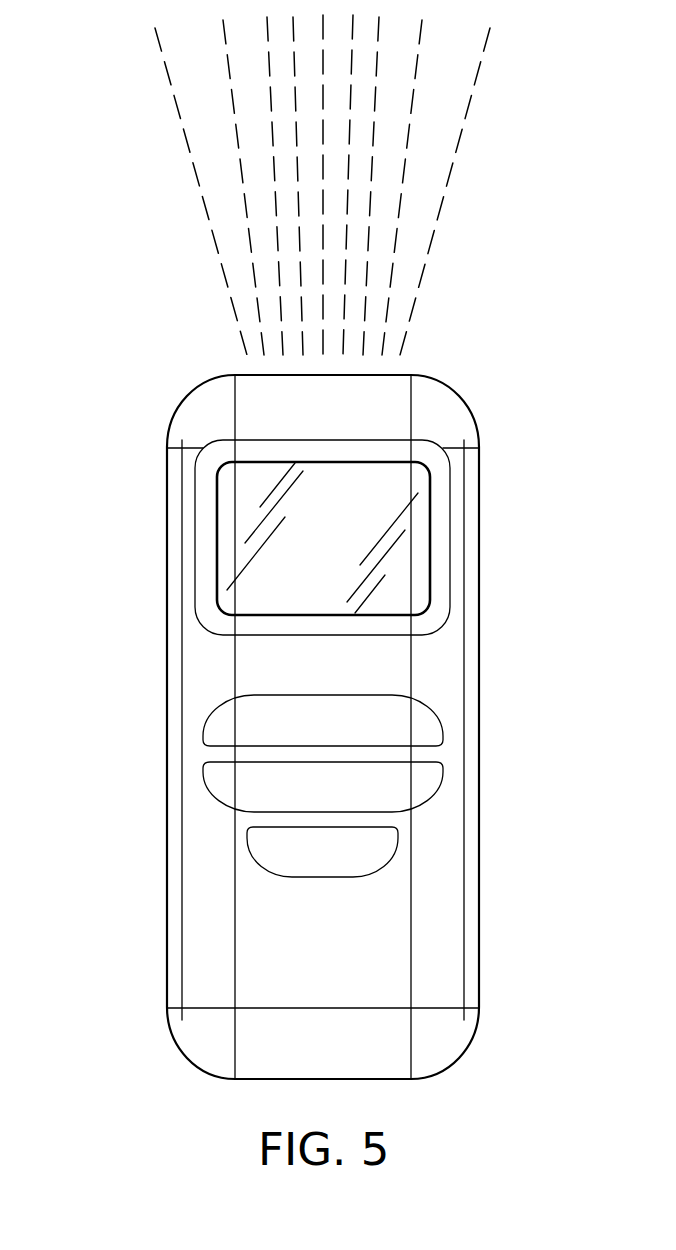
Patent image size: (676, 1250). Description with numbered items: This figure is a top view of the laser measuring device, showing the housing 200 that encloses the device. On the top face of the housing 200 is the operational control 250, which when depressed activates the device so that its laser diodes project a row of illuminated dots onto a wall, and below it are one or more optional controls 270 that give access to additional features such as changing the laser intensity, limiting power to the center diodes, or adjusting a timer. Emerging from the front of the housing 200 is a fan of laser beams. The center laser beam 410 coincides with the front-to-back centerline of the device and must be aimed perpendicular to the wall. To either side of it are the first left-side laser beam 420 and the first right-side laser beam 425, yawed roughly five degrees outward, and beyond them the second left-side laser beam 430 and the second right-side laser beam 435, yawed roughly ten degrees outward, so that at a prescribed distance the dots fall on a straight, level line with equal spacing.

The housing 200 is at (448, 393).
The operational control 250 is at (420, 535).
The optional controls 270 is at (139, 698).
The center laser beam 410 is at (323, 232).
The first left-side laser beam 420 is at (298, 197).
The first right-side laser beam 425 is at (345, 270).
The second left-side laser beam 430 is at (272, 123).
The second right-side laser beam 435 is at (363, 312).